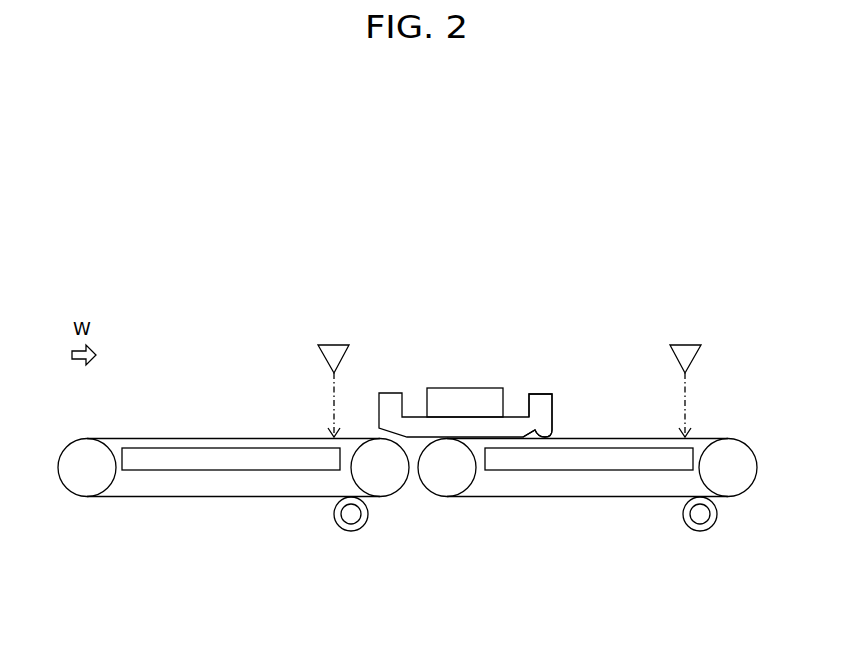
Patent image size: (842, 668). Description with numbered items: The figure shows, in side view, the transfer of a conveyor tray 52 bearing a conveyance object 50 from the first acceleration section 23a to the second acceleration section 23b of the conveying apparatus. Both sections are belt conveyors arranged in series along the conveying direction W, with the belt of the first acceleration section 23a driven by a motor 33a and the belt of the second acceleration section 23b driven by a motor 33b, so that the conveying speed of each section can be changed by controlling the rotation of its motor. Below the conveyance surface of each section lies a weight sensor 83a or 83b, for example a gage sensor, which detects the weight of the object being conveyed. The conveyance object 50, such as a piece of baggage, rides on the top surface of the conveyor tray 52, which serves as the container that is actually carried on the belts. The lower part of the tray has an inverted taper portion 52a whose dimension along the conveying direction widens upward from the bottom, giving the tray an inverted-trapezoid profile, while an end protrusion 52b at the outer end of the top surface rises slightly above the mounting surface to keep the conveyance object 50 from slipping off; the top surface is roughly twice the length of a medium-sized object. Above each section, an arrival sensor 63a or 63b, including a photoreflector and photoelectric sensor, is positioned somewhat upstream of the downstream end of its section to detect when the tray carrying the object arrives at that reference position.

The first acceleration section 23a is at (148, 488).
The second acceleration section 23b is at (498, 488).
The weight sensor 83a is at (263, 460).
The weight sensor 83b is at (613, 460).
The motor 33a is at (351, 532).
The motor 33b is at (701, 532).
The conveyor tray 52 is at (417, 415).
The inverted taper portion 52a is at (526, 436).
The end protrusion 52b is at (540, 393).
The conveyance object 50 is at (462, 388).
The arrival sensor 63a is at (336, 345).
The arrival sensor 63b is at (686, 345).